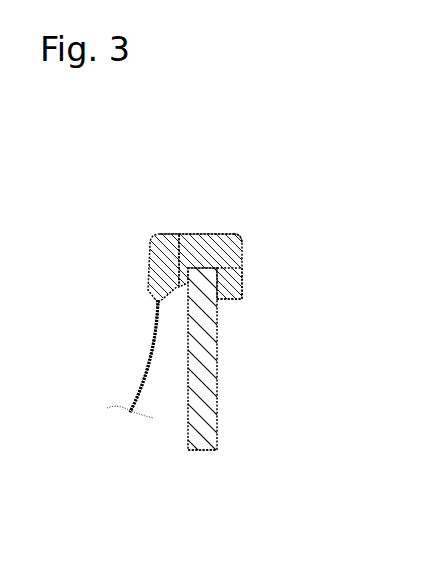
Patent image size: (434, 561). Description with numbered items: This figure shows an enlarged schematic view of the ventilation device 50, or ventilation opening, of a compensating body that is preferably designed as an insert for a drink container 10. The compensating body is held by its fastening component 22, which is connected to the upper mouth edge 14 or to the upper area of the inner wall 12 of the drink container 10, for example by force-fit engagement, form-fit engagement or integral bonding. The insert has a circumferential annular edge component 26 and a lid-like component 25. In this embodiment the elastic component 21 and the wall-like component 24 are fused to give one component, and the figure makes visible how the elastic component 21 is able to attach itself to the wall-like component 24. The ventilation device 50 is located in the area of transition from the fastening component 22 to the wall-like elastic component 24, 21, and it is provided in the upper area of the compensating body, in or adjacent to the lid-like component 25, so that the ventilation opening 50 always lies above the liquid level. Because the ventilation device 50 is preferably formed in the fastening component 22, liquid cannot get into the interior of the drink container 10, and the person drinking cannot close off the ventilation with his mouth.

The drink container 10 is at (218, 357).
The inner wall 12 is at (190, 420).
The upper mouth edge 14 is at (204, 268).
The elastic component 21 is at (138, 383).
The fastening component 22 is at (243, 268).
The wall-like component 24 is at (147, 273).
The lid-like component 25 is at (212, 232).
The circumferential annular edge component 26 is at (247, 225).
The ventilation device 50 is at (183, 232).